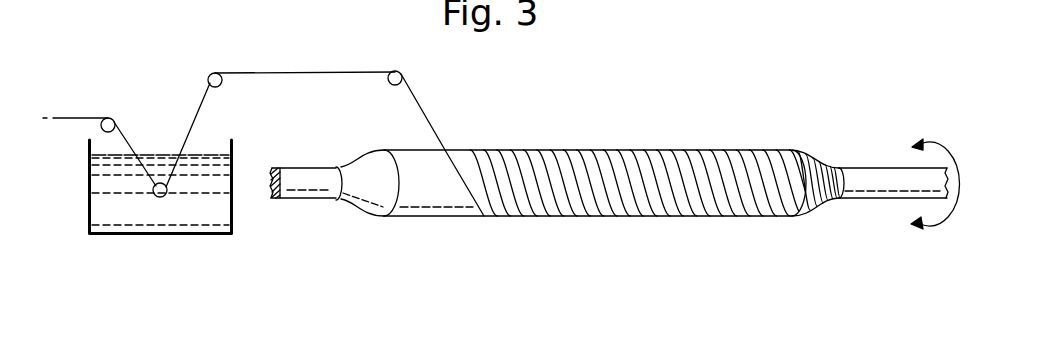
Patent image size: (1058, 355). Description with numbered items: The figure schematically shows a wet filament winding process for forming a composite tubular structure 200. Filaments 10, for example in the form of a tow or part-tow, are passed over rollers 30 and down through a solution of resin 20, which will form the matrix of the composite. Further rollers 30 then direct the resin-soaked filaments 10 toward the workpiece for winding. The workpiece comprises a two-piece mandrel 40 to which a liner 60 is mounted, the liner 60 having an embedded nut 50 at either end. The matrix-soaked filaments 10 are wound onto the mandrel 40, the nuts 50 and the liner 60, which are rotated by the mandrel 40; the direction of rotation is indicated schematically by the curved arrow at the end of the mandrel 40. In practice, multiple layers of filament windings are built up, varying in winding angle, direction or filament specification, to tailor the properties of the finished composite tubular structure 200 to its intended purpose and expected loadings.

The filaments 10 is at (85, 116).
The resin 20 is at (202, 212).
The rollers 30 is at (208, 77).
The mandrel 40 is at (302, 178).
The nut 50 is at (370, 190).
The liner 60 is at (442, 193).
The composite tubular structure 200 is at (670, 122).